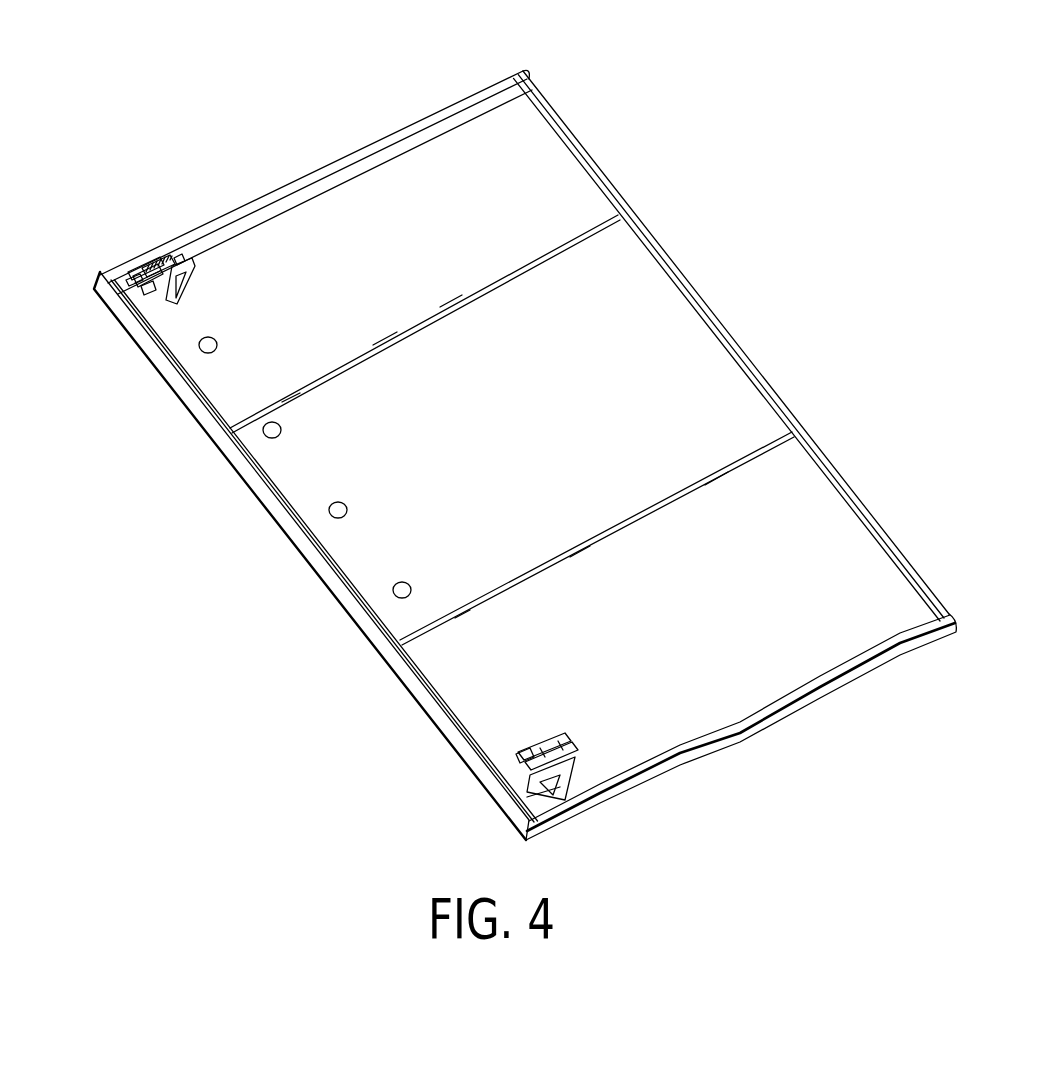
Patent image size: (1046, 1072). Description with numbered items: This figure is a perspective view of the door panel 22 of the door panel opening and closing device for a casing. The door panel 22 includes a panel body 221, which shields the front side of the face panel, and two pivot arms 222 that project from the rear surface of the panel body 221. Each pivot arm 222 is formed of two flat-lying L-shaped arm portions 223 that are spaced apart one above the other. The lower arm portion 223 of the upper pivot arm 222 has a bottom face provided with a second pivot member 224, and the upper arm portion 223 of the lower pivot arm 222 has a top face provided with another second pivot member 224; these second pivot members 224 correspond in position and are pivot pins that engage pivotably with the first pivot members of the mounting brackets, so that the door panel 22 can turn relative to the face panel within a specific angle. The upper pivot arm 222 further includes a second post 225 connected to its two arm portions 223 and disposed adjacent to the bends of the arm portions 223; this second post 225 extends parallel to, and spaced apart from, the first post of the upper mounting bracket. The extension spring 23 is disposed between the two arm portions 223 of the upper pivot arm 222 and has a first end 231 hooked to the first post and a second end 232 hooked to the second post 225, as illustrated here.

The door panel 22 is at (366, 132).
The panel body 221 is at (451, 158).
The pivot arm 222 is at (200, 278).
The arm portion 223 is at (176, 260).
The second pivot member 224 is at (150, 294).
The second post 225 is at (165, 260).
The extension spring 23 is at (146, 266).
The first end 231 is at (124, 276).
The second end 232 is at (190, 260).